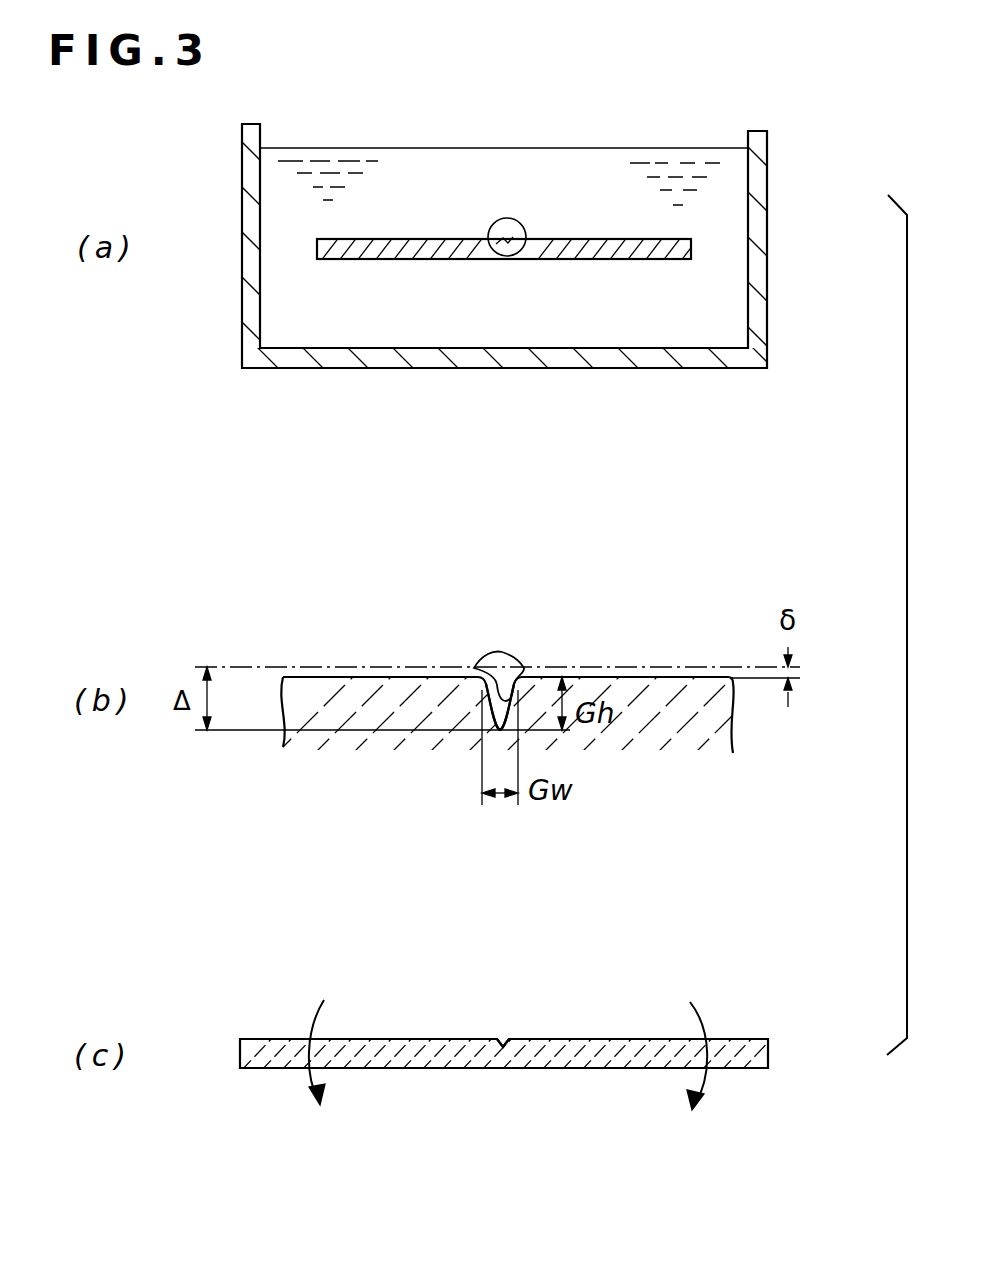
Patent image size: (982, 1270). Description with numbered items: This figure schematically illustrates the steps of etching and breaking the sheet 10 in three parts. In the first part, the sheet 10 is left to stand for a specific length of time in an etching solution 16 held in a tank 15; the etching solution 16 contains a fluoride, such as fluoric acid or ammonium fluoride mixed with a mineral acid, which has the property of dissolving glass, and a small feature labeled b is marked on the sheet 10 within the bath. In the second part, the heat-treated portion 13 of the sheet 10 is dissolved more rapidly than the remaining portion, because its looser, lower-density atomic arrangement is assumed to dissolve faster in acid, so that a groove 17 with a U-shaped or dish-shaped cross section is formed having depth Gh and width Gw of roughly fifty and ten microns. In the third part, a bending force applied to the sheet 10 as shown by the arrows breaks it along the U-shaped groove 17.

The sheet 10 is at (430, 239).
The bubble b is at (510, 219).
The etching solution 16 is at (675, 148).
The tank 15 is at (767, 283).
The heat-treated portion 13 is at (490, 658).
The groove 17 is at (512, 657).